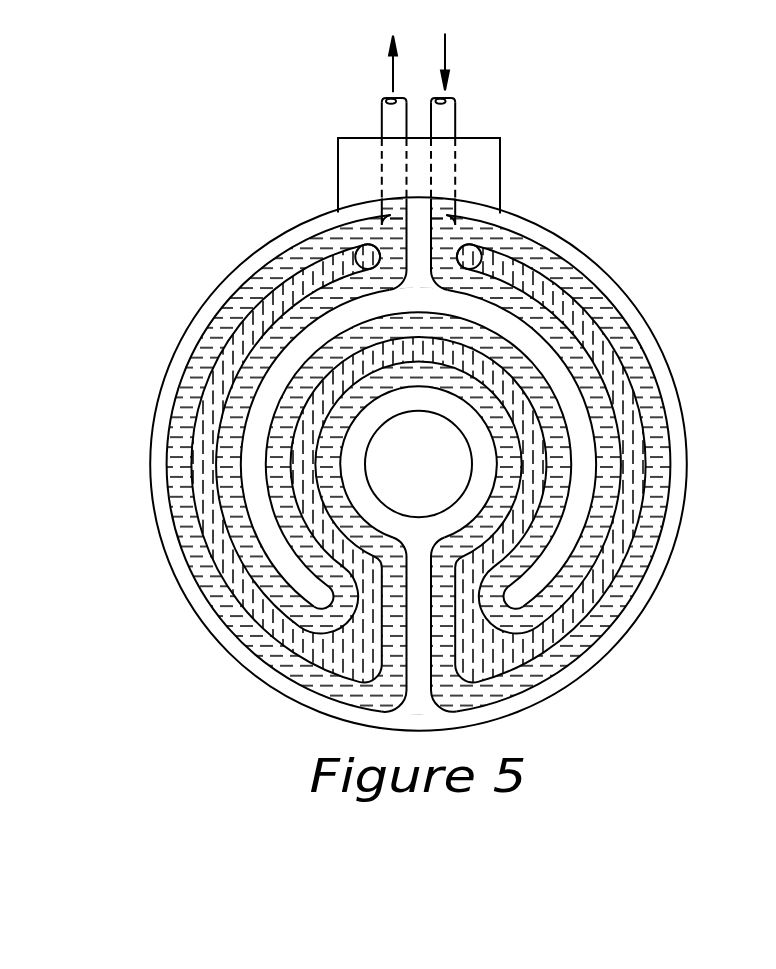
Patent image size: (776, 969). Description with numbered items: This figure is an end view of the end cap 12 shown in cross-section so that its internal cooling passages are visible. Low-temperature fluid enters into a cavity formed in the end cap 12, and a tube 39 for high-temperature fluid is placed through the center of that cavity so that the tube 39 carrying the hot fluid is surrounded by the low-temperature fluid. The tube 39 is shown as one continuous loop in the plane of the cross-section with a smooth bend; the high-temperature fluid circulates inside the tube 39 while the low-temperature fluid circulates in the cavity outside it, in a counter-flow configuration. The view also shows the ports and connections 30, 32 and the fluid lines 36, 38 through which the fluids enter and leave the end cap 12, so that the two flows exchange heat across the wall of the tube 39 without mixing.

The end cap 12 is at (628, 291).
The outlet port end / wall end pin (left) 30 is at (355, 258).
The inlet port end / wall end pin (right) 32 is at (482, 258).
The inlet tube 36 is at (455, 119).
The outlet tube 38 is at (382, 119).
The tube 39 is at (222, 600).